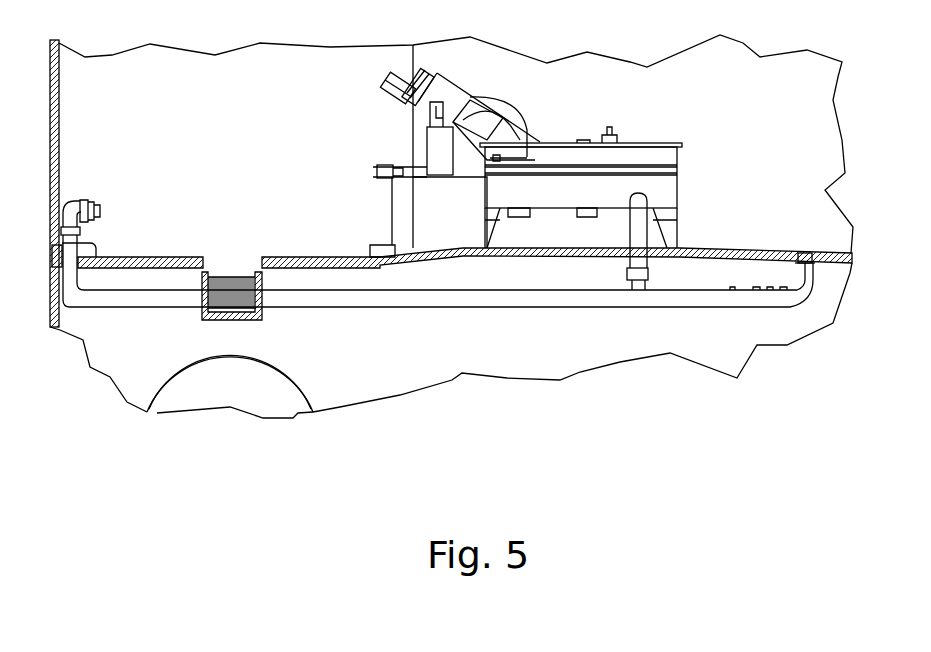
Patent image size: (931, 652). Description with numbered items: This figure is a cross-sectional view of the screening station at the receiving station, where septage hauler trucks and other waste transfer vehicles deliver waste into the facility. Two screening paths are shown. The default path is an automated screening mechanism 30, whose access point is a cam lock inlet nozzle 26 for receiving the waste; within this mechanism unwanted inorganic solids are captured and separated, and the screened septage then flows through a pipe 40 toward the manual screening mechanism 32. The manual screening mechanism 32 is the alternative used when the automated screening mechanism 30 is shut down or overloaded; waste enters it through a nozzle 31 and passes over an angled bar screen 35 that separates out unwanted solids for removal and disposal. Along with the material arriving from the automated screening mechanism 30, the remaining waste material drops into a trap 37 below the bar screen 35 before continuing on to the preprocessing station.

The nozzle 26 is at (373, 172).
The automated screening mechanism 30 is at (504, 150).
The nozzle 31 is at (100, 212).
The manual screening mechanism 32 is at (213, 298).
The angled bar screen 35 is at (222, 277).
The trap 37 is at (215, 313).
The pipe 40 is at (323, 308).